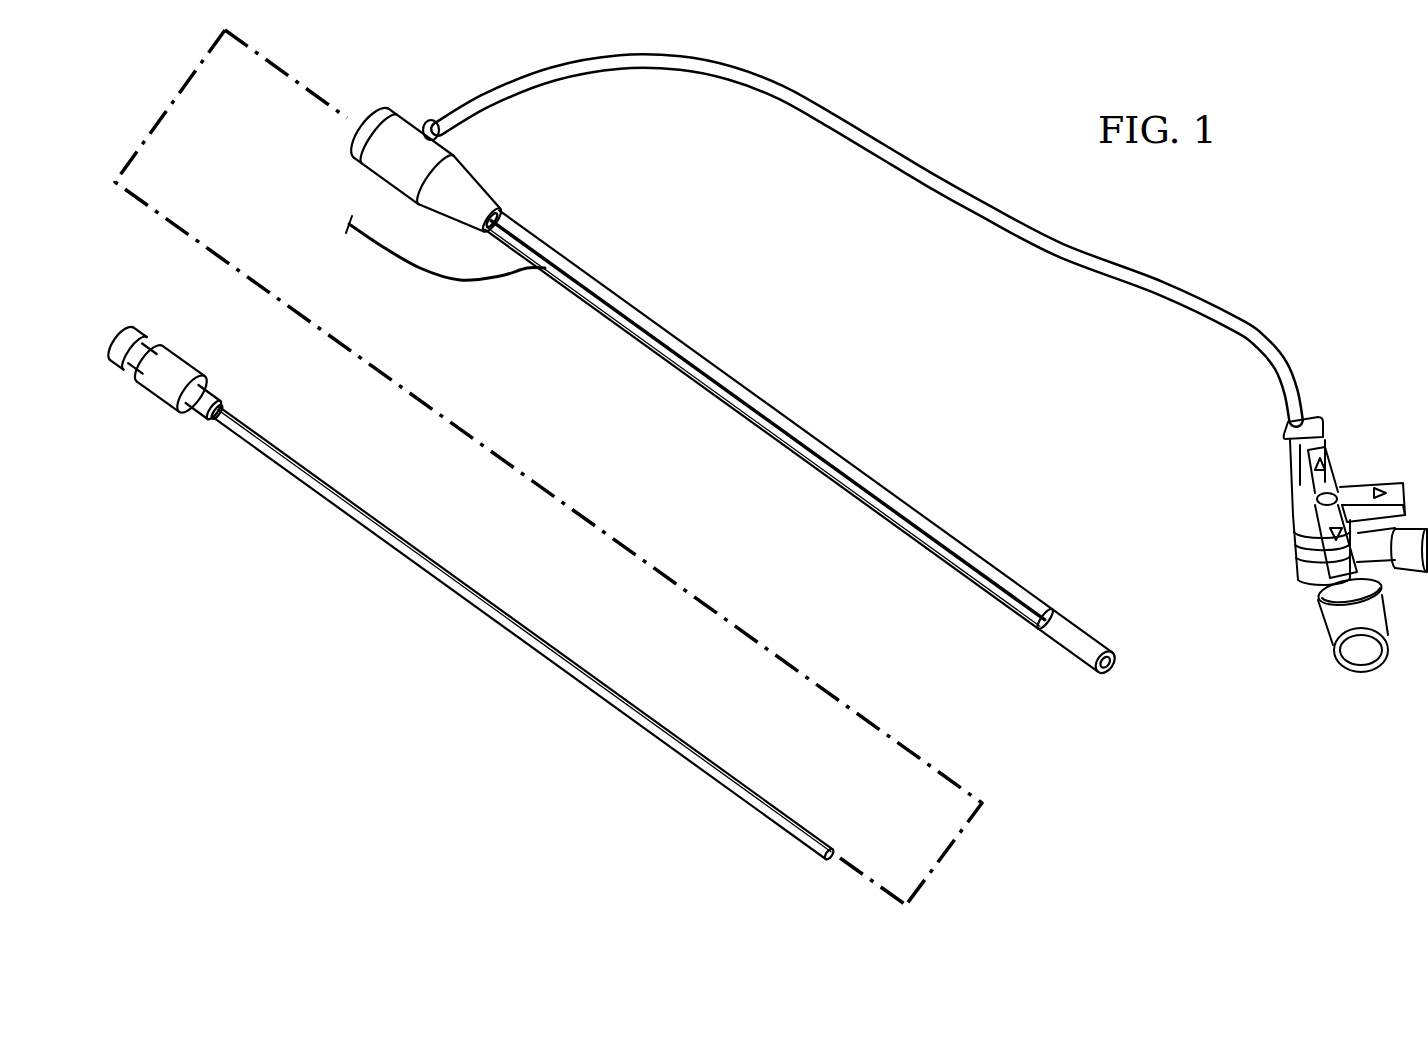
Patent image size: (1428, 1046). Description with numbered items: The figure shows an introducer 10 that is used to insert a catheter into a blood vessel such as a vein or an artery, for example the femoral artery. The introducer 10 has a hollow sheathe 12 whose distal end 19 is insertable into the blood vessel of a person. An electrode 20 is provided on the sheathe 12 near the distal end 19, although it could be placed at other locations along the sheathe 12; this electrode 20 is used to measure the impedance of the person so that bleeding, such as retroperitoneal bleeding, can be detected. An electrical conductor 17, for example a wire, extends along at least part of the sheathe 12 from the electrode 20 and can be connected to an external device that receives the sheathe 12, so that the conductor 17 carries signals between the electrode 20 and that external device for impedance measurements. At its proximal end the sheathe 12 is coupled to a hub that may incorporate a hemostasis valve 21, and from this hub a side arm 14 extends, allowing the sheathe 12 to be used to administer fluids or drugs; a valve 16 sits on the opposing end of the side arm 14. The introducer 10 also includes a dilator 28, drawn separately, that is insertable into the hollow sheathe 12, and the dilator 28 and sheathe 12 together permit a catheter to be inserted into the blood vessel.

The introducer 10 is at (1290, 184).
The hollow sheathe 12 is at (818, 442).
The side arm 14 is at (968, 199).
The valve 16 is at (1377, 437).
The electrical conductor 17 is at (393, 252).
The distal end 19 is at (1122, 672).
The electrode 20 is at (1046, 603).
The hemostasis valve 21 is at (391, 110).
The dilator 28 is at (118, 300).